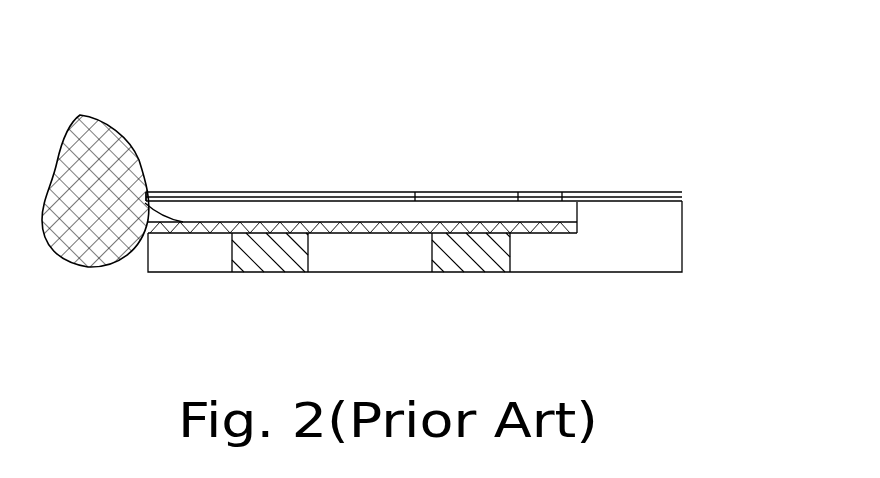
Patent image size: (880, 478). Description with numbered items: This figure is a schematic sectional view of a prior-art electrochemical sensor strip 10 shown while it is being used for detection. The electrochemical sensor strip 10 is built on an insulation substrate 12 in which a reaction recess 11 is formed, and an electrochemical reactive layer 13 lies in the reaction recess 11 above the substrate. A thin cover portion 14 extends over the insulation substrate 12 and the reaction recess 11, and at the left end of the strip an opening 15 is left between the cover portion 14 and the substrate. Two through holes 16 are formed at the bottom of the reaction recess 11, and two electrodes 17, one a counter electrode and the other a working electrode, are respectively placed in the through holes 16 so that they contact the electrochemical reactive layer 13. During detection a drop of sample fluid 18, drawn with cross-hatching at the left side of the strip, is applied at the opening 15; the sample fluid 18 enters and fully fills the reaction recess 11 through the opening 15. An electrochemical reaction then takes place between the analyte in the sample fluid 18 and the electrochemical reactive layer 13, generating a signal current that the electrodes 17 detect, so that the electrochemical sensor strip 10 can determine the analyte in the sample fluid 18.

The electrochemical sensor strip 10 is at (645, 166).
The reaction recess 11 is at (390, 207).
The insulation substrate 12 is at (652, 255).
The electrochemical reactive layer 13 is at (547, 228).
The cover portion 14 is at (293, 181).
The opening 15 is at (150, 199).
The through holes 16 is at (308, 257).
The electrodes 17 is at (265, 267).
The sample fluid 18 is at (80, 128).